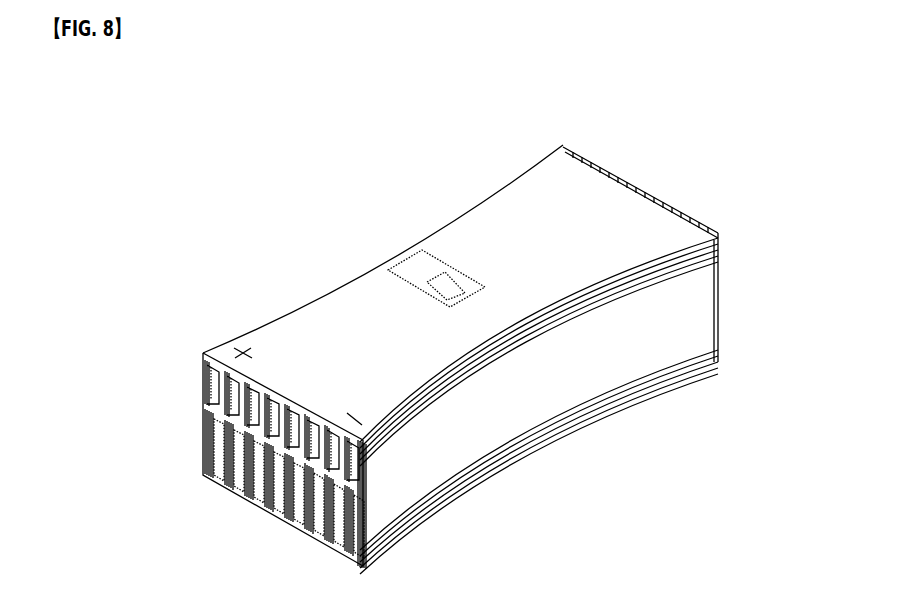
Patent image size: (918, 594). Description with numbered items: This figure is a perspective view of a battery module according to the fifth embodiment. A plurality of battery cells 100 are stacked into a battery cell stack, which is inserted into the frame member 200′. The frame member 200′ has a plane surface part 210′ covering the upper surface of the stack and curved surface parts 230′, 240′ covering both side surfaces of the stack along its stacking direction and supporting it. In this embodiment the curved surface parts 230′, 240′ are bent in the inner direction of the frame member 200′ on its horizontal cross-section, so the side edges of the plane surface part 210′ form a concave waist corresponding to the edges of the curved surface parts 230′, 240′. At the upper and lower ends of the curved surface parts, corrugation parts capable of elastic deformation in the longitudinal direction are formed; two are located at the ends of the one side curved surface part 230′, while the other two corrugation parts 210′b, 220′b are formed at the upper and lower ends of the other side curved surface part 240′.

The battery cell 100 is at (282, 527).
The frame member 200′ is at (391, 180).
The plane surface part 210′ is at (564, 190).
The corrugation part 210′b is at (692, 243).
The corrugation part 220′b is at (600, 410).
The curved surface part 230′ is at (292, 294).
The curved surface part 240′ is at (695, 305).